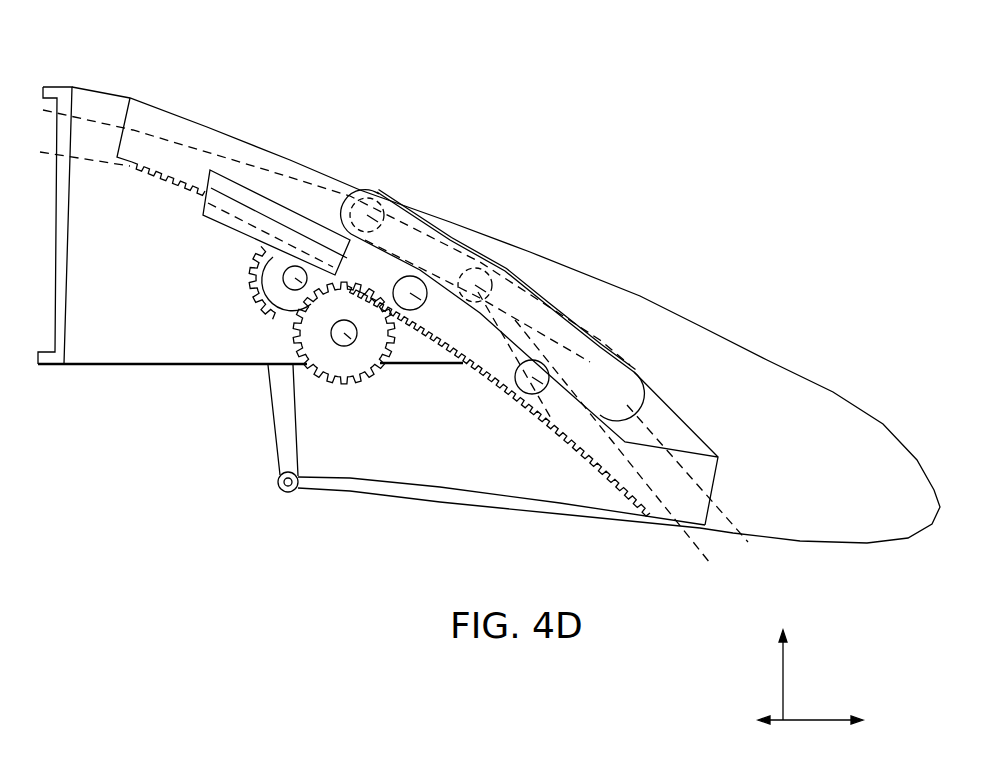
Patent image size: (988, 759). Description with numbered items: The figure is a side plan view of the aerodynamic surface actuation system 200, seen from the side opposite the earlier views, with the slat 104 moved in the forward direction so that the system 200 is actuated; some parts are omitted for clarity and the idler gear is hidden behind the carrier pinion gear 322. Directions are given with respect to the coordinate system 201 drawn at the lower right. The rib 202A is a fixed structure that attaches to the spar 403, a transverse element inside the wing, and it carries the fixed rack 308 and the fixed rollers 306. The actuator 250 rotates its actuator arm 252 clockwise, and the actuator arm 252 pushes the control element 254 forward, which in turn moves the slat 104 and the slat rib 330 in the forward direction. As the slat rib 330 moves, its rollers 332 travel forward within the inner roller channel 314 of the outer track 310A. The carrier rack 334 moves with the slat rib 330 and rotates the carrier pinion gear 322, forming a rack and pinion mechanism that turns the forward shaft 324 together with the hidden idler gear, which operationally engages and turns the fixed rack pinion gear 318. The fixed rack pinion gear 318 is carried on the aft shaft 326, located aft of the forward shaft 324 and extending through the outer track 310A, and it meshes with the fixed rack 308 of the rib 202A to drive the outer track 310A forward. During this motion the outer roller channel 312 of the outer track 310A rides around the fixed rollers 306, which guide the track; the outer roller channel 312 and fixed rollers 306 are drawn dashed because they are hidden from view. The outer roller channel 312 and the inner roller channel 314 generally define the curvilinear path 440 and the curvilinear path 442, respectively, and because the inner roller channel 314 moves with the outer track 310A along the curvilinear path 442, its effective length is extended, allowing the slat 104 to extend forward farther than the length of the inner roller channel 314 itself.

The slat 104 is at (836, 392).
The aerodynamic surface actuation system 200 is at (697, 237).
The coordinate system 201 is at (802, 703).
The rib 202A is at (113, 366).
The actuator 250 is at (266, 397).
The actuator arm 252 is at (279, 466).
The control element 254 is at (415, 505).
The fixed rollers 306 is at (487, 267).
The fixed rack 308 is at (128, 130).
The outer track 310A is at (270, 187).
The outer roller channel 312 is at (507, 293).
The inner roller channel 314 is at (240, 210).
The fixed rack pinion gear 318 is at (237, 296).
The carrier pinion gear 322 is at (359, 357).
The forward shaft 324 is at (344, 340).
The aft shaft 326 is at (280, 284).
The slat rib 330 is at (667, 487).
The rollers 332 is at (548, 372).
The carrier rack 334 is at (547, 422).
The spar 403 is at (55, 313).
The curvilinear path 440 is at (755, 552).
The curvilinear path 442 is at (712, 560).